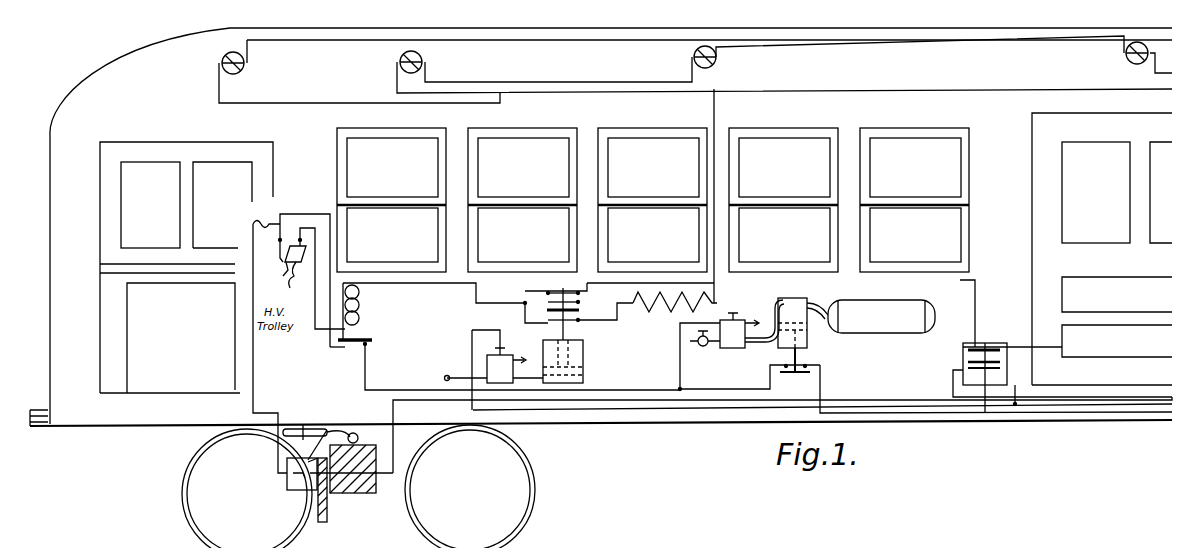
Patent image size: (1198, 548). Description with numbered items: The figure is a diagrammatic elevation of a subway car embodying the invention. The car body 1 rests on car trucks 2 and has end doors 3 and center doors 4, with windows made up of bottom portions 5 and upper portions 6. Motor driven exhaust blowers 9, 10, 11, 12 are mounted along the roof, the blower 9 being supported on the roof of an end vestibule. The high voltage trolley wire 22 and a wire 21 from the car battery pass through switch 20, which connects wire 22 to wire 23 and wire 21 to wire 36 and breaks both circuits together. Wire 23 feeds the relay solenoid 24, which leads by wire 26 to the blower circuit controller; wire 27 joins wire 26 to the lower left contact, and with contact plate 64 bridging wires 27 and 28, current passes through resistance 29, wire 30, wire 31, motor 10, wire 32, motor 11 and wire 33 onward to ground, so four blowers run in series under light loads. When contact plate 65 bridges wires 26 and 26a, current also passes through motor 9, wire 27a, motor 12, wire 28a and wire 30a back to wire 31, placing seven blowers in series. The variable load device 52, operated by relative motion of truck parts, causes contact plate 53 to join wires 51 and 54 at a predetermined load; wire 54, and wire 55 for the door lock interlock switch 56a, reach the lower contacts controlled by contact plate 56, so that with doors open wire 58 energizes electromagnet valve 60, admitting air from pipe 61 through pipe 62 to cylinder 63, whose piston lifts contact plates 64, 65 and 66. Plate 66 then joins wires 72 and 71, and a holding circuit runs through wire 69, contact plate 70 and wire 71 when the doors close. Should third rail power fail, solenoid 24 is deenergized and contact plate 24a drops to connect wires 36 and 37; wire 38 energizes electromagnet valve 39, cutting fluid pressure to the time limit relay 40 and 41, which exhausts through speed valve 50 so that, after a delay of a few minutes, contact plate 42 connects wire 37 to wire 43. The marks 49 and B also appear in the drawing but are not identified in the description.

The car body 1 is at (100, 425).
The car trucks 2 is at (342, 476).
The end doors 3 is at (172, 393).
The center doors 4 is at (1102, 249).
The bottom portions of windows 5 is at (654, 235).
The upper portions of windows 6 is at (653, 200).
The motor driven exhaust blower 9 is at (241, 69).
The motor driven exhaust blower 10 is at (410, 71).
The motor driven exhaust blower 11 is at (714, 62).
The motor driven exhaust blower 12 is at (1149, 65).
The switch 20 is at (295, 251).
The wire 21 is at (278, 265).
The high voltage trolley wire 22 is at (282, 285).
The wire 23 is at (343, 333).
The relay solenoid 24 is at (362, 312).
The contact plate 24a is at (372, 340).
The wire 26 is at (476, 290).
The wire 26a is at (345, 103).
The wire 27 is at (525, 323).
The wire 27a is at (603, 40).
The wire 28 is at (617, 318).
The wire 28a is at (1155, 80).
The resistance 29 is at (655, 310).
The wire 30 is at (716, 290).
The wire 30a is at (946, 80).
The wire 31 is at (632, 91).
The wire 32 is at (598, 82).
The wire 33 is at (778, 47).
The wire 36 is at (293, 214).
The wire 37 is at (404, 382).
The wire 38 is at (680, 372).
The electromagnet valve 39 is at (734, 346).
The time limit relay 40 is at (807, 338).
The time limit relay 41 is at (872, 330).
The contact plate 42 is at (797, 374).
The wire 43 is at (822, 382).
The pipe 49 is at (748, 310).
The speed valve 50 is at (706, 346).
The wire 51 is at (253, 395).
The variable load device 52 is at (340, 428).
The contact plate 53 is at (300, 490).
The wire 54 is at (393, 430).
The wire 55 is at (953, 380).
The contact plate 56 is at (1000, 364).
The door lock interlock switch 56a is at (963, 352).
The wire 58 is at (537, 410).
The electromagnet valve 60 is at (495, 358).
The pipe 61 is at (460, 378).
The pipe 62 is at (526, 367).
The cylinder 63 is at (583, 358).
The contact plate 64 is at (578, 322).
The contact plate 65 is at (578, 304).
The contact plate 66 is at (563, 288).
The wire 69 is at (1018, 347).
The contact plate 70 is at (985, 340).
The wire 71 is at (975, 300).
The wire 72 is at (468, 338).
The battery B is at (273, 280).